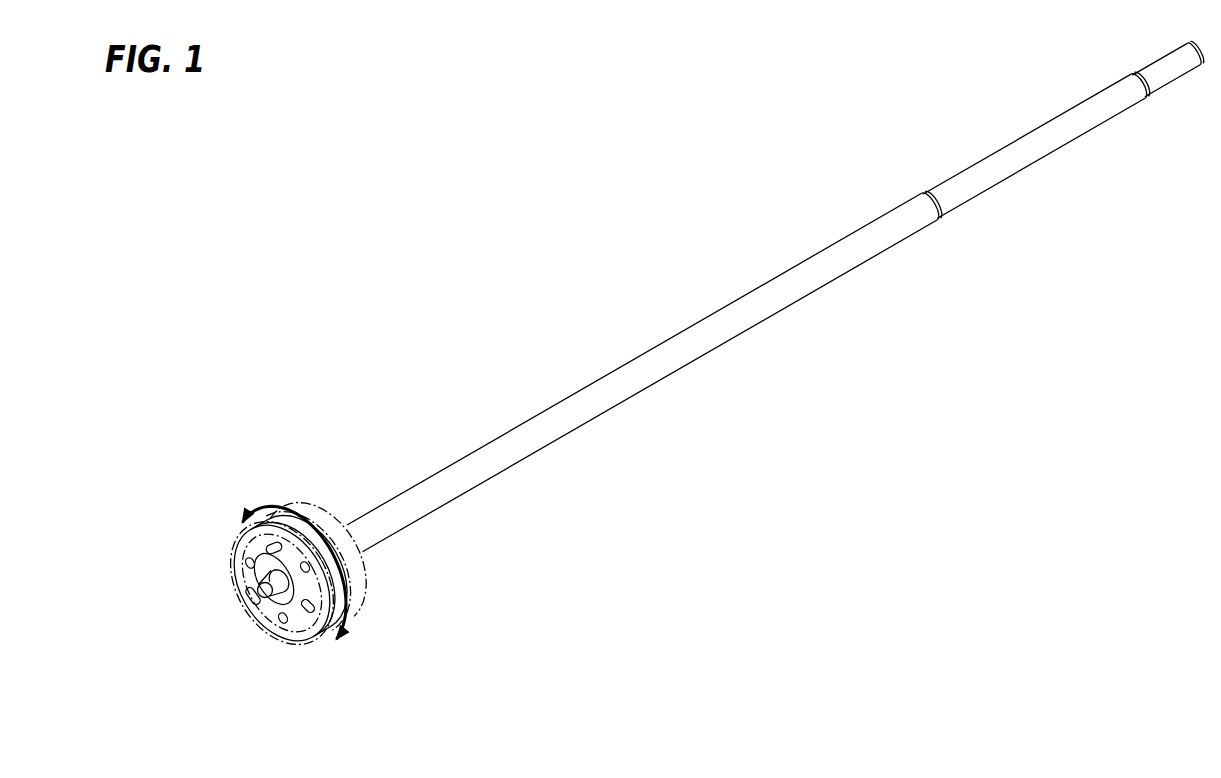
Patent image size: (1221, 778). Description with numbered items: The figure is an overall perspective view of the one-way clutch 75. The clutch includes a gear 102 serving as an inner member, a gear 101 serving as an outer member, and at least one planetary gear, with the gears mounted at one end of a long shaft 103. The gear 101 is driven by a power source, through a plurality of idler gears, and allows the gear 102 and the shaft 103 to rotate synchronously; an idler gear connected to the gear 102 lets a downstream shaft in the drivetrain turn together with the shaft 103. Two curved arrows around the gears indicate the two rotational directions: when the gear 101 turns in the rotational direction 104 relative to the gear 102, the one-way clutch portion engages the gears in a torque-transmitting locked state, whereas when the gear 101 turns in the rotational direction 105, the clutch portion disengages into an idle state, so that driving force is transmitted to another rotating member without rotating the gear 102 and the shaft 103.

The one-way clutch 75 is at (281, 479).
The gear (outer member) 101 is at (263, 635).
The gear (inner member) 102 is at (337, 510).
The shaft 103 is at (652, 376).
The rotational direction 104 is at (270, 503).
The rotational direction 105 is at (343, 622).